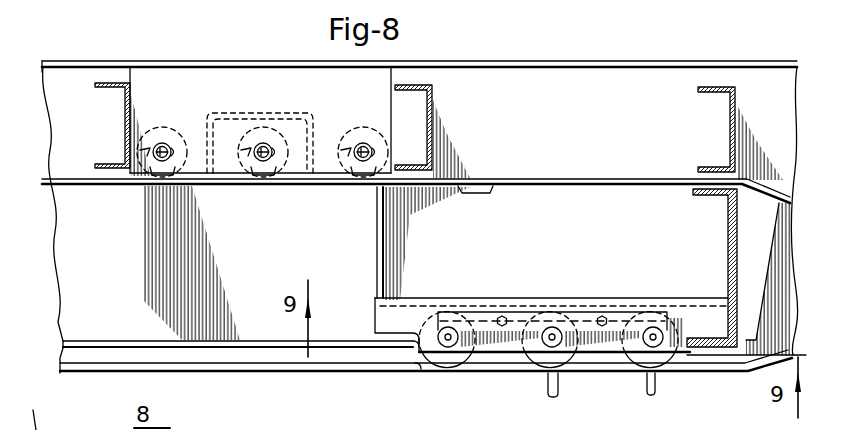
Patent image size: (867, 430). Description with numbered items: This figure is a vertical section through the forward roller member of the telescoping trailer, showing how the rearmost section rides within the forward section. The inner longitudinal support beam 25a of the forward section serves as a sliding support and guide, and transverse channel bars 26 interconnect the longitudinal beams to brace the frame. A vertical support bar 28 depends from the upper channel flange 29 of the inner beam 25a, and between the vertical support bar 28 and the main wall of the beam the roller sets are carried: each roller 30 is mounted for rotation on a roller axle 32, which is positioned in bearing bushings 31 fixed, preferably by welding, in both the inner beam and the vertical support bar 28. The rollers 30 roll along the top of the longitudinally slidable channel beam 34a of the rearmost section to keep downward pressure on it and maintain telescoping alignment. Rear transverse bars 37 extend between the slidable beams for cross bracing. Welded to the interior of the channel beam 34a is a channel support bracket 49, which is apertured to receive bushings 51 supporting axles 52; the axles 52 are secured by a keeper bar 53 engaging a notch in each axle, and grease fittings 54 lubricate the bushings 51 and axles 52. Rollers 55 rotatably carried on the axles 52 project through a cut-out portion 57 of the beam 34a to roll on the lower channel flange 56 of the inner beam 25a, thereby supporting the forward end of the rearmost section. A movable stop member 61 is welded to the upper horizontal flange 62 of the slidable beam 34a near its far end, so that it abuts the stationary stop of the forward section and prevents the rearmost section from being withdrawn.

The inner longitudinal support beam 25a is at (580, 114).
The transverse channel bar 26 is at (126, 113).
The vertical support bar 28 is at (150, 77).
The upper channel flange 29 is at (206, 65).
The roller 30 is at (153, 128).
The bearing bushing 31 is at (163, 152).
The roller axle 32 is at (158, 160).
The longitudinally slidable channel beam 34a is at (272, 266).
The rear transverse bar 37 is at (729, 229).
The channel support bracket 49 is at (400, 303).
The bushing 51 is at (451, 366).
The axle 52 is at (465, 360).
The keeper bar 53 is at (527, 316).
The grease fitting 54 is at (449, 337).
The roller 55 is at (440, 357).
The lower channel flange 56 is at (236, 365).
The cut-out portion 57 is at (418, 356).
The movable stop member 61 is at (478, 195).
The upper horizontal flange 62 is at (548, 182).